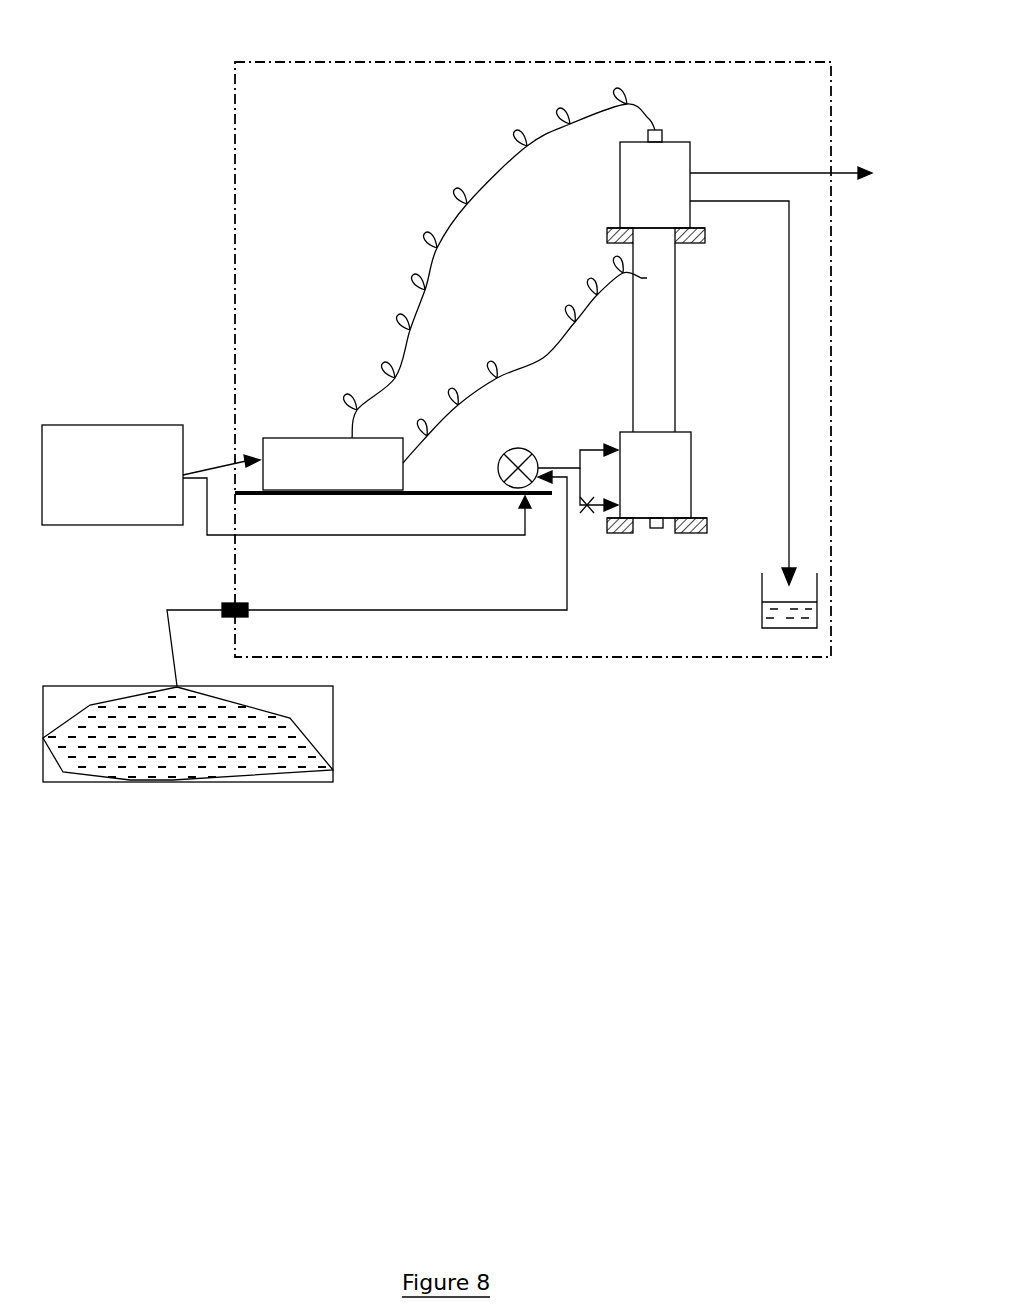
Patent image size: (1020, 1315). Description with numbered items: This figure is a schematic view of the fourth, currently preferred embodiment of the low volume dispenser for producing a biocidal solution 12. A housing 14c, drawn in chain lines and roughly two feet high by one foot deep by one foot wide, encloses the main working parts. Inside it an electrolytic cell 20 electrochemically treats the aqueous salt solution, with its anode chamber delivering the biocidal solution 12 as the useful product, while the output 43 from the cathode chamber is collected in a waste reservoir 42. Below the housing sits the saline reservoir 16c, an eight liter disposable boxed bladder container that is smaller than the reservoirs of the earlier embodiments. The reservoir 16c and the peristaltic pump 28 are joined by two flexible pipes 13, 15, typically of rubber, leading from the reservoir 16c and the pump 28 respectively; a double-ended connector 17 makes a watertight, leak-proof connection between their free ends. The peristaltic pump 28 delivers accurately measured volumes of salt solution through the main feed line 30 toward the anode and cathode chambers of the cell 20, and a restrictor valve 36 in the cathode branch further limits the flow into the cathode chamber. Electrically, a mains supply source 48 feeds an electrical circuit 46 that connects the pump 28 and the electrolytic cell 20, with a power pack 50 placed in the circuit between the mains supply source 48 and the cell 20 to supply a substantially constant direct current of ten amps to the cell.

The housing 14c is at (470, 62).
The electrolytic cell 20 is at (684, 130).
The biocidal solution 12 is at (795, 174).
The waste reservoir 42 is at (830, 583).
The output 43 is at (762, 612).
The peristaltic pump 28 is at (520, 449).
The main feed line 30 is at (552, 465).
The restrictor valve 36 is at (582, 515).
The pipe 15 is at (540, 617).
The double-ended connector 17 is at (220, 598).
The pipe 13 is at (167, 643).
The saline reservoir 16c is at (333, 770).
The mains supply source 48 is at (55, 425).
The electrical circuit 46 is at (222, 470).
The power pack 50 is at (308, 452).